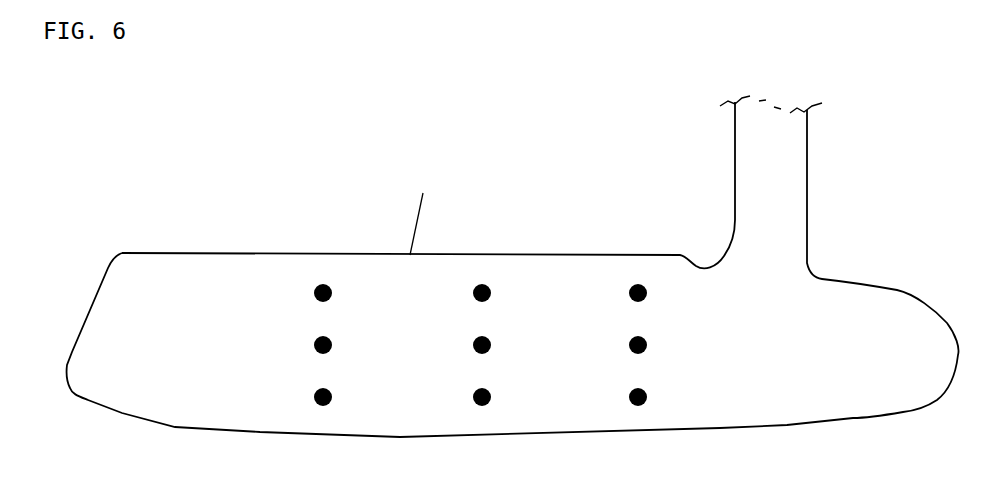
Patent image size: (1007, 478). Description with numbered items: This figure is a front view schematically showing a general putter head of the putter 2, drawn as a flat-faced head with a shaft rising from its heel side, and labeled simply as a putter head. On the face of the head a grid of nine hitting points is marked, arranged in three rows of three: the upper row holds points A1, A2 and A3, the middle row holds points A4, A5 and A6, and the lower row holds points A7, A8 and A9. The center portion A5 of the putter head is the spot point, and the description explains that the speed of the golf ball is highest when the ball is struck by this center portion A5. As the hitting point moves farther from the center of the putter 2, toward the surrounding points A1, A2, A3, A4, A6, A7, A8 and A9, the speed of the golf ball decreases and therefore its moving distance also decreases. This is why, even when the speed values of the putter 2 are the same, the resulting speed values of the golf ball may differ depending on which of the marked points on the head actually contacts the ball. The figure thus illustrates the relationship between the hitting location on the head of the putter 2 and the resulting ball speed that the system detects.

The putter 2 is at (96, 119).
The hitting point of the putter head A1 is at (302, 295).
The hitting point of the putter head A2 is at (459, 295).
The hitting point of the putter head A3 is at (615, 295).
The hitting point of the putter head A4 is at (301, 347).
The center portion of the putter head A5 is at (459, 347).
The hitting point of the putter head A6 is at (615, 347).
The hitting point of the putter head A7 is at (301, 400).
The hitting point of the putter head A8 is at (459, 400).
The hitting point of the putter head A9 is at (615, 400).